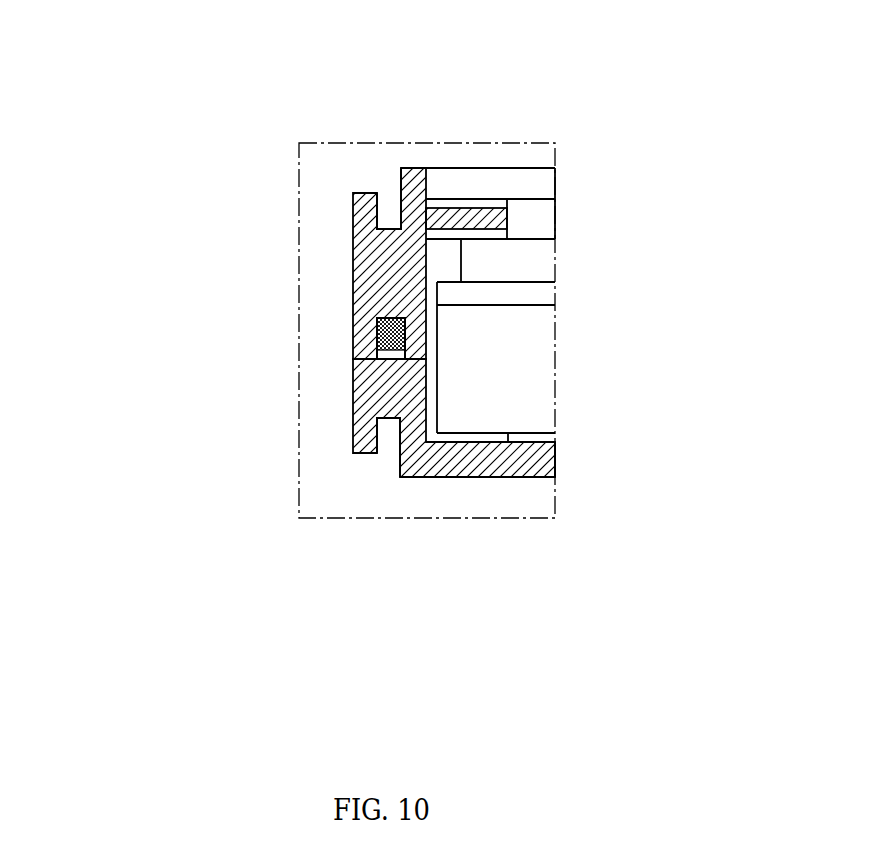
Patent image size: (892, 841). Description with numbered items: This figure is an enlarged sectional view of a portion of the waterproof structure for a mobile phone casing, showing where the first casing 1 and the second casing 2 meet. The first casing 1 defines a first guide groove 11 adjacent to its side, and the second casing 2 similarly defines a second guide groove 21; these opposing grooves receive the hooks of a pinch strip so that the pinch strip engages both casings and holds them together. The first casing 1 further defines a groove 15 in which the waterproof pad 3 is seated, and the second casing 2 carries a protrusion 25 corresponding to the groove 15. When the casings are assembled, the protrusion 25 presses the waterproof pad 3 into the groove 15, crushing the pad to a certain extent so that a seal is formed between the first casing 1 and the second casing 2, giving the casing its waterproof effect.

The first casing 1 is at (405, 248).
The first guide groove 11 is at (390, 217).
The groove 15 is at (390, 320).
The waterproof pad 3 is at (377, 323).
The protrusion 25 is at (377, 358).
The second casing 2 is at (513, 460).
The second guide groove 21 is at (388, 433).